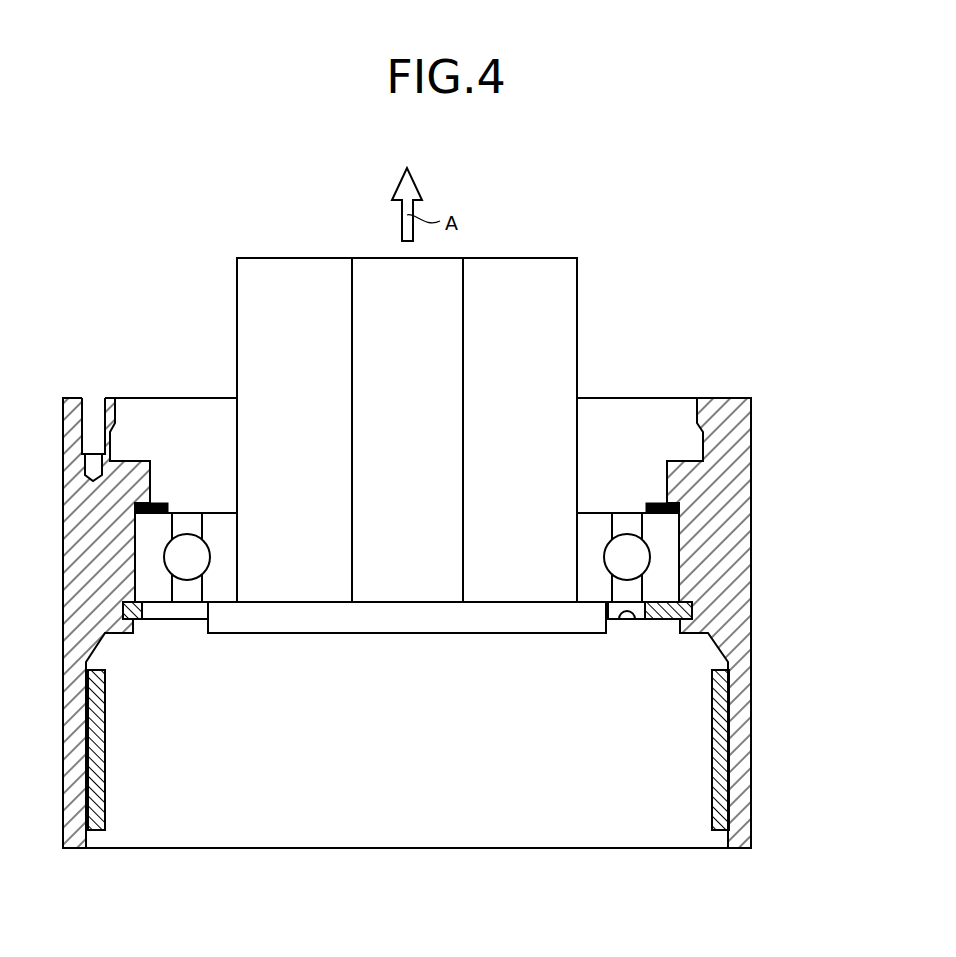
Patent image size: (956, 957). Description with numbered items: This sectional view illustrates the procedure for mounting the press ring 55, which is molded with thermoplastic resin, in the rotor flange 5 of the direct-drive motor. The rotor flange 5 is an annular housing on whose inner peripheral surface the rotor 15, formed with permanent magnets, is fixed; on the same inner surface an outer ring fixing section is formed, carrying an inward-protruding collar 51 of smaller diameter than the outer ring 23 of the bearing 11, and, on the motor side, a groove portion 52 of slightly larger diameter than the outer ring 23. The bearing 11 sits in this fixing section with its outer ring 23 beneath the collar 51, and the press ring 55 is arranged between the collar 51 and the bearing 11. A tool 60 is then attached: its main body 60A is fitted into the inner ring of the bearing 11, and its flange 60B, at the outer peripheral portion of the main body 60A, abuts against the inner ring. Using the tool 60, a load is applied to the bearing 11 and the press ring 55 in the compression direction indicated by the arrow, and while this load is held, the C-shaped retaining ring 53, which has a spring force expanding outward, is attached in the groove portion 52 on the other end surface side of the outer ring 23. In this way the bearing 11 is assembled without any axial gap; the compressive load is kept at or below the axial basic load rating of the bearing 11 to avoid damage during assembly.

The rotor flange 5 is at (742, 578).
The bearing 11 is at (667, 590).
The rotor 15 is at (717, 767).
The outer ring 23 is at (665, 535).
The collar 51 is at (683, 472).
The groove portion 52 is at (628, 615).
The C-shaped retaining ring 53 is at (138, 613).
The press ring 55 is at (672, 505).
The tool 60 is at (535, 266).
The main body 60A is at (565, 322).
The flange 60B is at (592, 623).